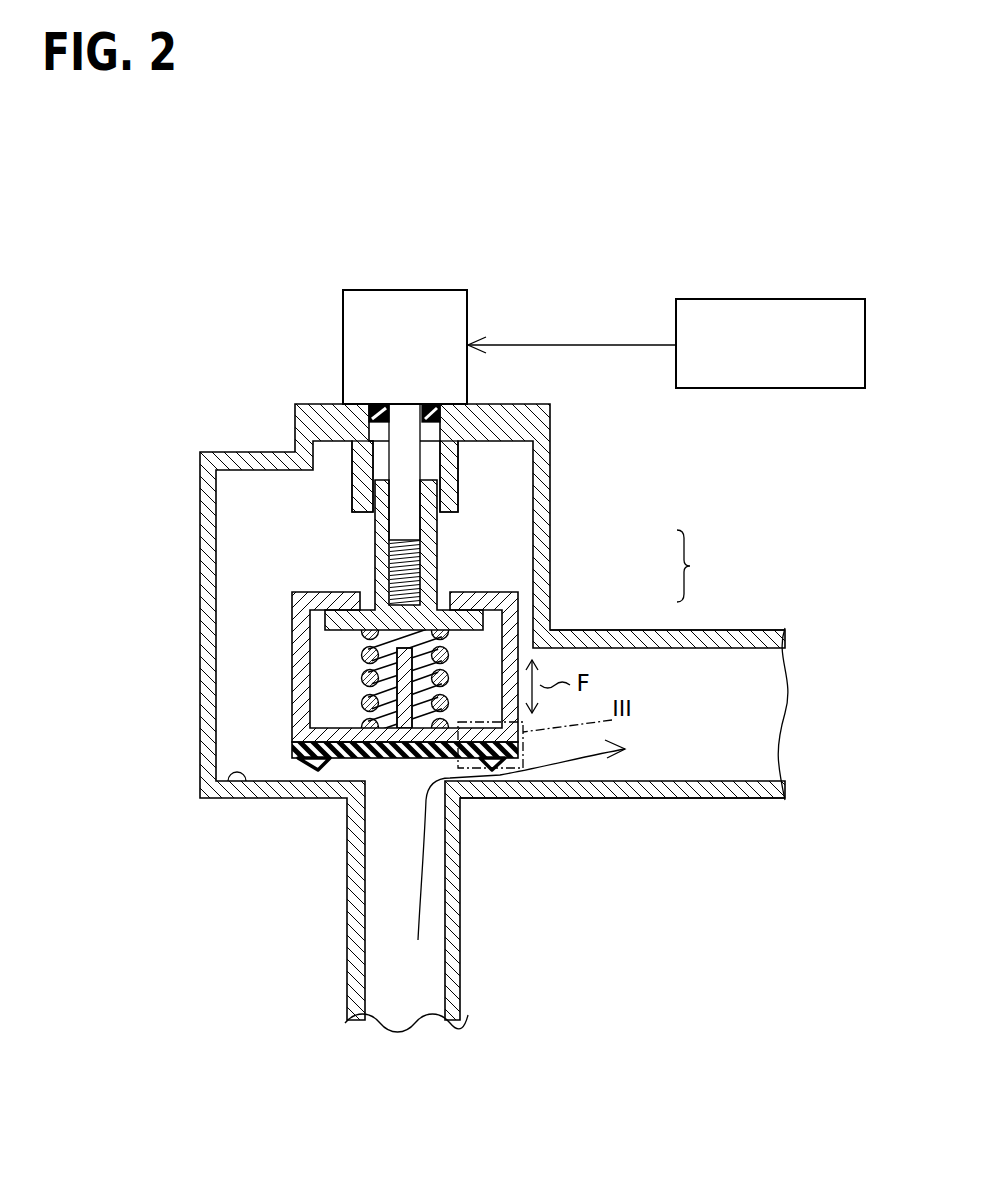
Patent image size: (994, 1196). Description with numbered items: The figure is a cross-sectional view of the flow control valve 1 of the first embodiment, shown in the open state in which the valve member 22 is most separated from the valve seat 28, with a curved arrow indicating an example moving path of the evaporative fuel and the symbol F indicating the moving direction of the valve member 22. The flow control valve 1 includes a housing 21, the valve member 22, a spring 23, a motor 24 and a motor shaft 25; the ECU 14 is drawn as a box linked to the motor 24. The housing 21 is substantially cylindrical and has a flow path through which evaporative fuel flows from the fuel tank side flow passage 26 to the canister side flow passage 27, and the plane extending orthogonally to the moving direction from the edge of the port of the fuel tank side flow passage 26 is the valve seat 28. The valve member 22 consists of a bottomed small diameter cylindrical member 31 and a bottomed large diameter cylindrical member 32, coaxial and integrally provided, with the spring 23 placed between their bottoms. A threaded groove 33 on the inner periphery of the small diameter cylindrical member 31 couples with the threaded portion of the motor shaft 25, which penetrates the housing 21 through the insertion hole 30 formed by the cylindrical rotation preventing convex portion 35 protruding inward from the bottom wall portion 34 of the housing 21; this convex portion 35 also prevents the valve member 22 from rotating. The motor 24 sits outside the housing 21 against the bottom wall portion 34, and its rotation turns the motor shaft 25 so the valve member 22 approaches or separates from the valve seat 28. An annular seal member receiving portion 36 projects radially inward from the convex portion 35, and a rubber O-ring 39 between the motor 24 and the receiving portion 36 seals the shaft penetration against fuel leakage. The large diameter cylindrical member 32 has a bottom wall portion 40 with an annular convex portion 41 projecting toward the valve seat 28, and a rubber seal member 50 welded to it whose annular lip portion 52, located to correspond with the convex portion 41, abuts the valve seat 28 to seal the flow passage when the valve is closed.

The flow control valve 1 is at (588, 228).
The ECU 14 is at (865, 330).
The housing 21 is at (210, 618).
The valve member 22 is at (699, 566).
The spring 23 is at (362, 697).
The motor 24 is at (343, 304).
The motor shaft 25 is at (397, 525).
The fuel tank side flow passage 26 is at (417, 982).
The canister side flow passage 27 is at (723, 765).
The valve seat 28 is at (223, 782).
The insertion hole 30 is at (367, 497).
The small diameter cylindrical member 31 is at (437, 555).
The large diameter cylindrical member 32 is at (513, 620).
The threaded groove 33 is at (400, 580).
The bottom wall portion 34 is at (533, 427).
The rotation preventing convex portion 35 is at (455, 488).
The seal member receiving portion 36 is at (434, 432).
The rubber O-ring 39 is at (370, 413).
The bottom wall portion 40 is at (325, 752).
The annular convex portion 41 is at (297, 730).
The rubber seal member 50 is at (350, 750).
The lip portion 52 is at (498, 780).